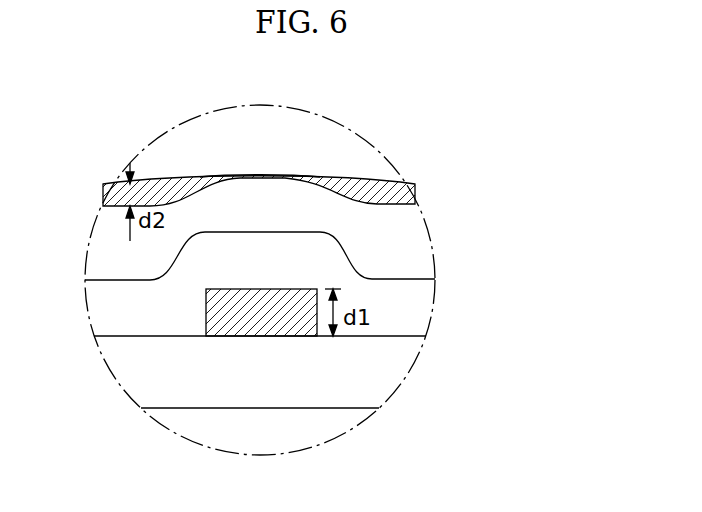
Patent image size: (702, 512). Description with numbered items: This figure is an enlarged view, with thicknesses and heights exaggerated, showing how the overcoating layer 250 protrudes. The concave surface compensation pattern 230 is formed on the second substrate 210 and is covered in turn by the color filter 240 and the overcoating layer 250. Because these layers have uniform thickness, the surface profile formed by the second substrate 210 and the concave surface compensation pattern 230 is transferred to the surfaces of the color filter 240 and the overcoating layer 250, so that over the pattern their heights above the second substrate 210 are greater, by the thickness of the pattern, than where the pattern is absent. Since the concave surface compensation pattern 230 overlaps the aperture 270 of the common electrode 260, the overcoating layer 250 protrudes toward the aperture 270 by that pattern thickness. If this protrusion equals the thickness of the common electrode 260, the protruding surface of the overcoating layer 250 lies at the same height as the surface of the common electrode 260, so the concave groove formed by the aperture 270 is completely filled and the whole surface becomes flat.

The second substrate 210 is at (332, 393).
The concave surface compensation pattern 230 is at (261, 318).
The color filter 240 is at (418, 309).
The overcoating layer 250 is at (417, 242).
The common electrode 260 is at (402, 193).
The aperture 270 is at (267, 165).